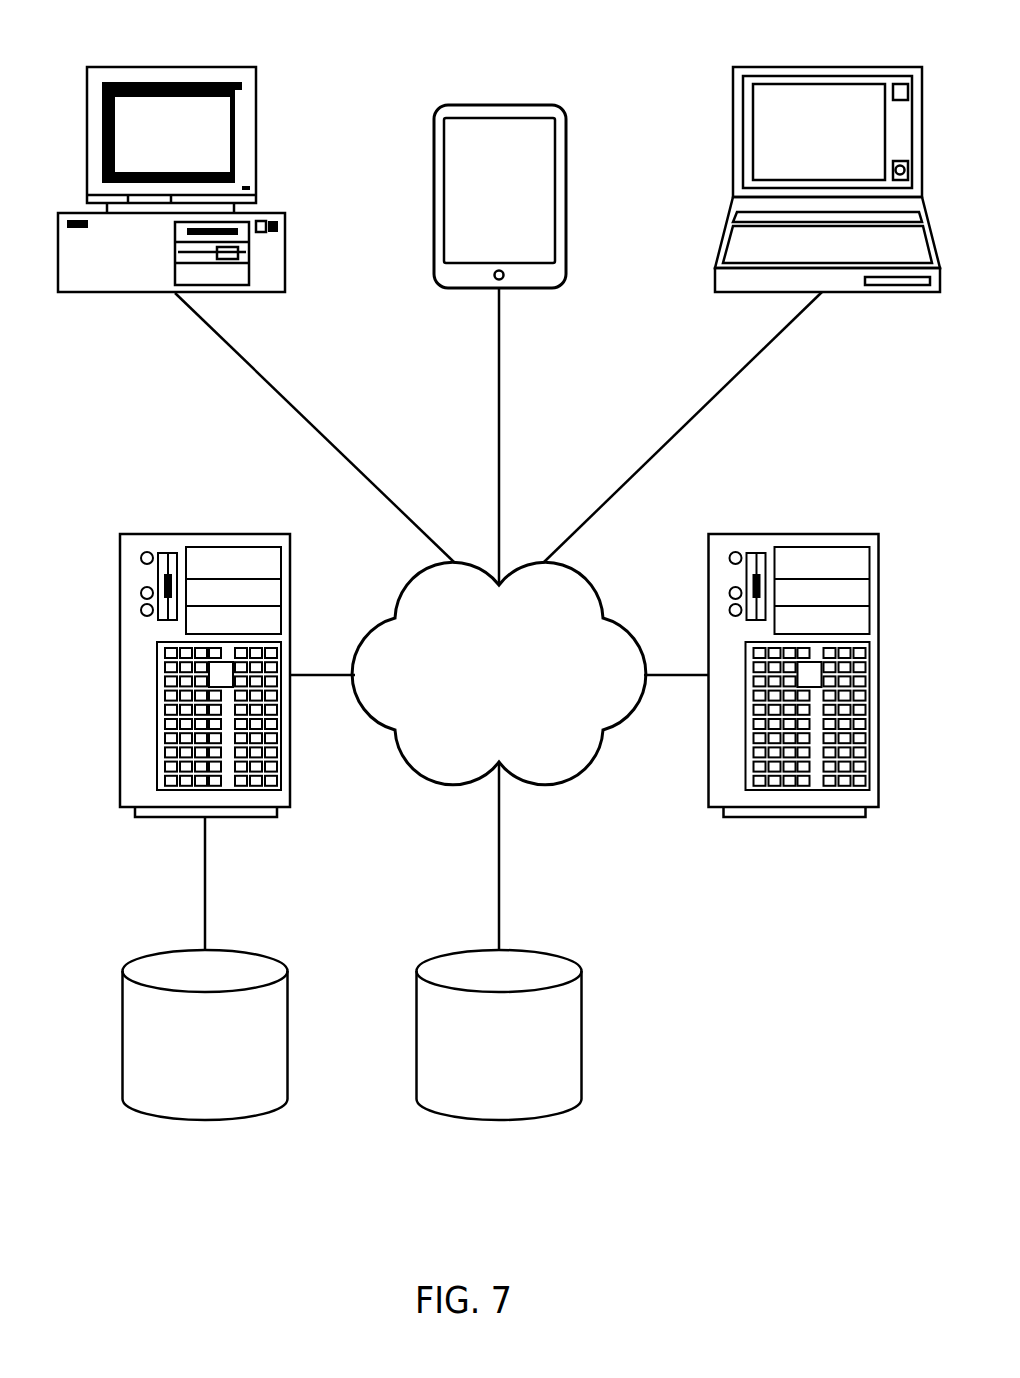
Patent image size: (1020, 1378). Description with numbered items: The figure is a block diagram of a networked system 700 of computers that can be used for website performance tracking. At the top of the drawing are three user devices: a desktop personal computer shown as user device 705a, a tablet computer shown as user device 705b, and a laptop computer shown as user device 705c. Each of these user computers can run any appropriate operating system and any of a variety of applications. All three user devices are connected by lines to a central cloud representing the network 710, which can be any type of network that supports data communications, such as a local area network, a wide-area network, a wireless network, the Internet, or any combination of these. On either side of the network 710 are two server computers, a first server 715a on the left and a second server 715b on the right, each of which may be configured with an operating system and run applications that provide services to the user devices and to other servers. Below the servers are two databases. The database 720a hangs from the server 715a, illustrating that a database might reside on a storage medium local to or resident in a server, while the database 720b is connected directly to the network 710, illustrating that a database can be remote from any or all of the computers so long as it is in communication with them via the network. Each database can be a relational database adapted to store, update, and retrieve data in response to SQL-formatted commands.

The system 700 is at (499, 618).
The user device 705a is at (285, 235).
The user device 705b is at (433, 235).
The user device 705c is at (733, 180).
The network 710 is at (540, 788).
The server computer 715a is at (120, 674).
The server computer 715b is at (878, 674).
The database 720a is at (205, 1120).
The database 720b is at (499, 1120).